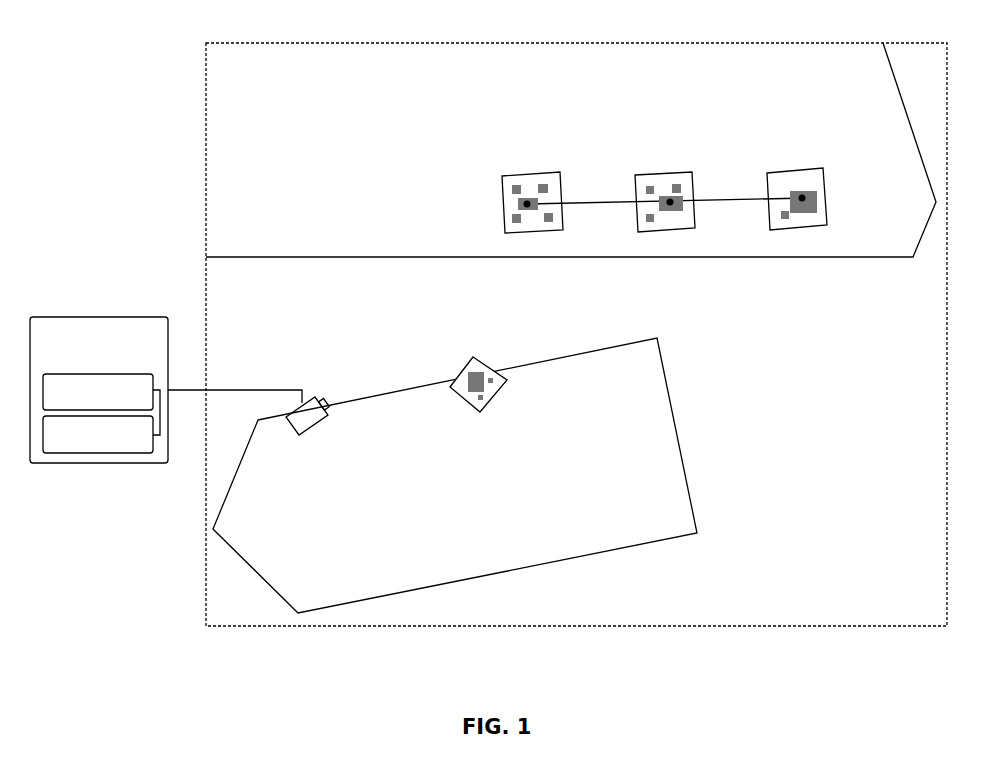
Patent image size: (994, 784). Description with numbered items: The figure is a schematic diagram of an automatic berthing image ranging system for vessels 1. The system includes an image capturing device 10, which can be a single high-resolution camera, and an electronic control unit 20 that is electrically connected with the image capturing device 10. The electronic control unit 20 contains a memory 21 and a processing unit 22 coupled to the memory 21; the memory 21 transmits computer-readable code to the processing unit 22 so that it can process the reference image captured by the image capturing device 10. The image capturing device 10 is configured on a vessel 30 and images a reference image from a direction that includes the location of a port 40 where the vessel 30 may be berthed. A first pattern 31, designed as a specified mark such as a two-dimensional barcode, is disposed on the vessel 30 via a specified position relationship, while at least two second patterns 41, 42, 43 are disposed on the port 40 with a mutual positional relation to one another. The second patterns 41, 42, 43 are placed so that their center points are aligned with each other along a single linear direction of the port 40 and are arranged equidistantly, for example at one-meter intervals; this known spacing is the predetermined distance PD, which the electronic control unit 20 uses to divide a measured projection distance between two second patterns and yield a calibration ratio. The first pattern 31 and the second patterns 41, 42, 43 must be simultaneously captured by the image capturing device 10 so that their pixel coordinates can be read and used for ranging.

The automatic berthing image ranging system for vessels 1 is at (117, 69).
The image capturing device 10 is at (306, 395).
The electronic control unit 20 is at (108, 358).
The memory 21 is at (98, 392).
The processing unit 22 is at (98, 434).
The vessel 30 is at (572, 559).
The first pattern 31 is at (468, 358).
The port 40 is at (823, 259).
The second pattern 41 is at (522, 173).
The second pattern 42 is at (660, 173).
The second pattern 43 is at (793, 170).
The predetermined distance PD is at (600, 203).